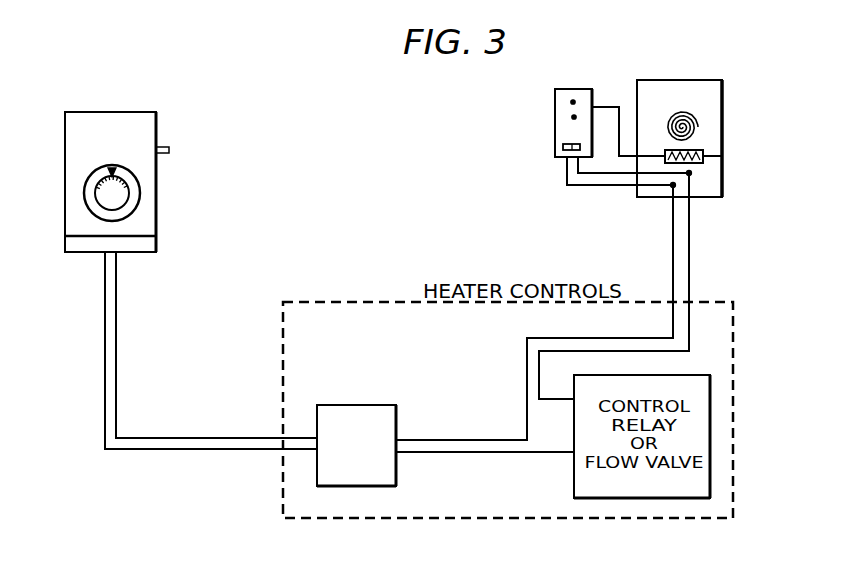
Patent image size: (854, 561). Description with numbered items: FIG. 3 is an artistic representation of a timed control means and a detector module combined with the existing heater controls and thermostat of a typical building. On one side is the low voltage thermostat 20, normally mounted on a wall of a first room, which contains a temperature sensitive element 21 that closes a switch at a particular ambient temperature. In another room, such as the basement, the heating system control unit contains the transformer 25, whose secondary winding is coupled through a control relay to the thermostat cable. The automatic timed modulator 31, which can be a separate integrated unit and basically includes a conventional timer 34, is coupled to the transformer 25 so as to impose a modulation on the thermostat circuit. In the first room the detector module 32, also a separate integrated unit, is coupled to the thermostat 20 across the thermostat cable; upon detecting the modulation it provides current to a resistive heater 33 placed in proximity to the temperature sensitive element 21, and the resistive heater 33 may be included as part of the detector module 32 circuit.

The low voltage thermostat 20 is at (676, 85).
The temperature sensitive element 21 is at (698, 120).
The transformer 25 is at (369, 458).
The automatic timed modulator 31 is at (123, 118).
The detector module 32 is at (555, 110).
The resistive heater 33 is at (704, 156).
The timer 34 is at (98, 196).